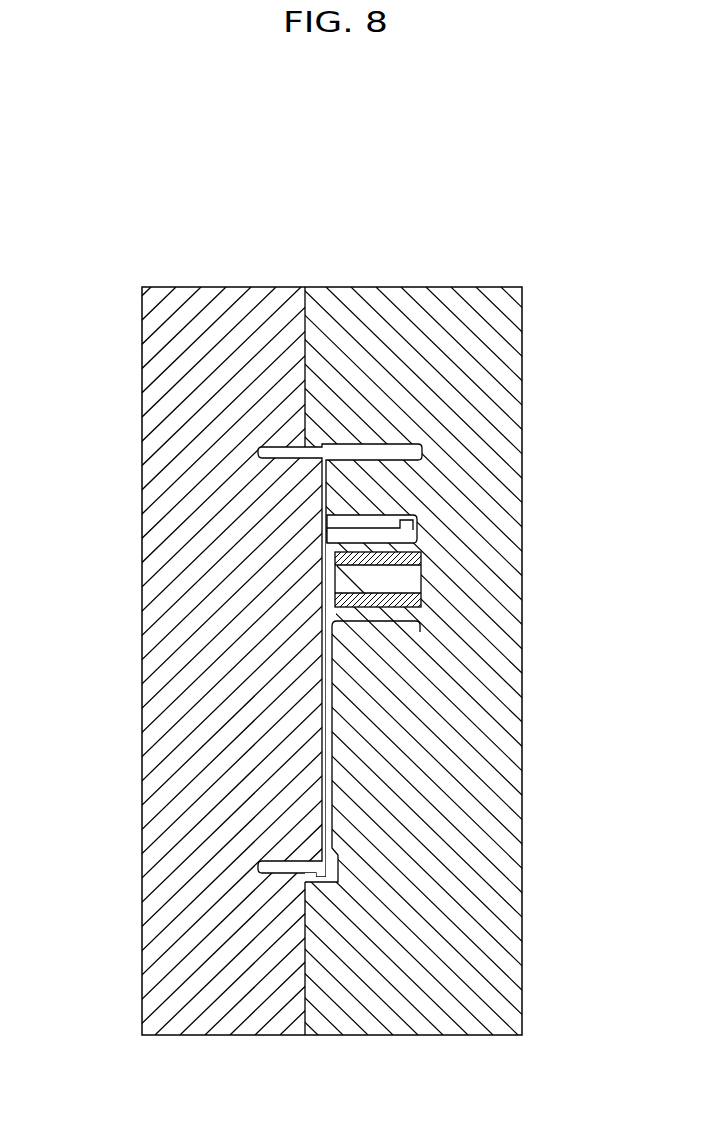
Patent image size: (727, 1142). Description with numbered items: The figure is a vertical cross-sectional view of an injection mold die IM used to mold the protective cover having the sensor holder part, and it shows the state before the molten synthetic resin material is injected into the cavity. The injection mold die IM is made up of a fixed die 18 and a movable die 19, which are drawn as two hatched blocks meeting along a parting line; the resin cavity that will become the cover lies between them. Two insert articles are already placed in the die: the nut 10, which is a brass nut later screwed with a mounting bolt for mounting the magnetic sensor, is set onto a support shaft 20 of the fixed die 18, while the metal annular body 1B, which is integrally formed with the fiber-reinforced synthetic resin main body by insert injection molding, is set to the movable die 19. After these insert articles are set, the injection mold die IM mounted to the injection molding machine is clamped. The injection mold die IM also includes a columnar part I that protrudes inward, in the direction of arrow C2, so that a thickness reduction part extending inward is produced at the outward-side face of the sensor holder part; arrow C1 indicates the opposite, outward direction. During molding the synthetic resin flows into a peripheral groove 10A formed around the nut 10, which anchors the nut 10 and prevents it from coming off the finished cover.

The injection mold die IM is at (363, 611).
The fixed die 18 is at (498, 347).
The movable die 19 is at (157, 340).
The metal annular body 1B is at (293, 443).
The columnar part I is at (383, 532).
The support shaft 20 is at (385, 555).
The nut 10 is at (463, 737).
The peripheral groove 10A is at (393, 624).
The arrow C1 is at (285, 202).
The arrow C2 is at (388, 207).